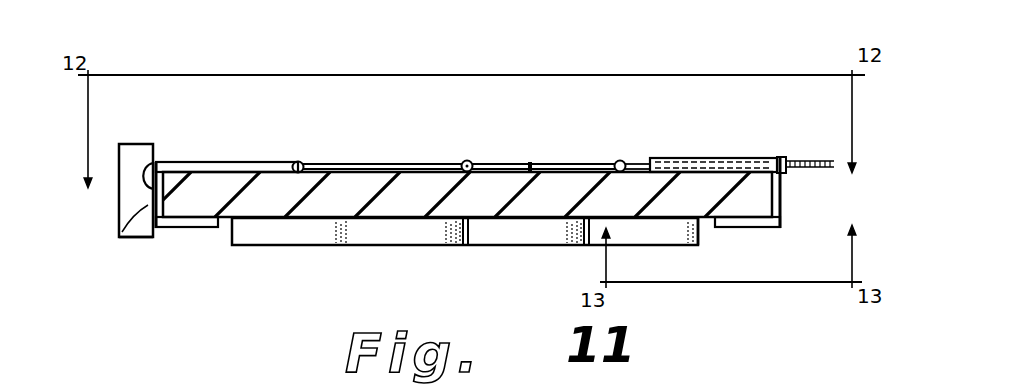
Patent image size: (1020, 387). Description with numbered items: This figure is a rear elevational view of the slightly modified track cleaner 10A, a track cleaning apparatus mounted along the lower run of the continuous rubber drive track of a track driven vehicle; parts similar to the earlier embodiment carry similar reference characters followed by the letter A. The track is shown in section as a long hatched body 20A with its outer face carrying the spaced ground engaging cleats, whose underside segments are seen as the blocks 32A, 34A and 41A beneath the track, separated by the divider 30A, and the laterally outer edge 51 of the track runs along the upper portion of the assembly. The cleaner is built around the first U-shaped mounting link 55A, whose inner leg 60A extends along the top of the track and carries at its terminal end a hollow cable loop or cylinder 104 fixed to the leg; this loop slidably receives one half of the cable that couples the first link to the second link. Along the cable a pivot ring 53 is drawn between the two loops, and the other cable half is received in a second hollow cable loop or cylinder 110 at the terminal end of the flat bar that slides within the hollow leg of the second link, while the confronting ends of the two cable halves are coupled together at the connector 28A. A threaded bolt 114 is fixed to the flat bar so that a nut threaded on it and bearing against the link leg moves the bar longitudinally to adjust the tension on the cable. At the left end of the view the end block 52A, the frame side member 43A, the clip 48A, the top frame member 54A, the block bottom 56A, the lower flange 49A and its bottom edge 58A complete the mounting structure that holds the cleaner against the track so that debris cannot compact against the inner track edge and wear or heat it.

The track cleaner 10A is at (279, 137).
The door panel 20A is at (528, 207).
The latch rod 28A is at (531, 162).
The base divider 30A is at (562, 219).
The base member 32A is at (368, 235).
The base segment 34A is at (518, 246).
The base end member 41A is at (703, 239).
The frame side member 43A is at (119, 223).
The clip 48A is at (153, 167).
The lower flange 49A is at (182, 203).
The laterally outer edge 51 is at (403, 164).
The end block 52A is at (128, 154).
The pivot ring 53 is at (471, 161).
The top frame member 54A is at (253, 70).
The U-shaped link 55A is at (300, 248).
The block bottom 56A is at (153, 221).
The flange bottom edge 58A is at (199, 228).
The inner leg 60A is at (197, 161).
The hollow cable loop 104 is at (302, 161).
The hollow cable loop 110 is at (620, 160).
The threaded bolt 114 is at (795, 169).